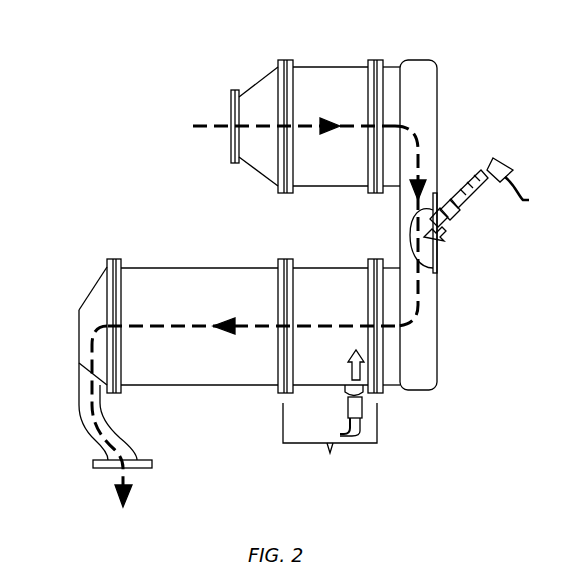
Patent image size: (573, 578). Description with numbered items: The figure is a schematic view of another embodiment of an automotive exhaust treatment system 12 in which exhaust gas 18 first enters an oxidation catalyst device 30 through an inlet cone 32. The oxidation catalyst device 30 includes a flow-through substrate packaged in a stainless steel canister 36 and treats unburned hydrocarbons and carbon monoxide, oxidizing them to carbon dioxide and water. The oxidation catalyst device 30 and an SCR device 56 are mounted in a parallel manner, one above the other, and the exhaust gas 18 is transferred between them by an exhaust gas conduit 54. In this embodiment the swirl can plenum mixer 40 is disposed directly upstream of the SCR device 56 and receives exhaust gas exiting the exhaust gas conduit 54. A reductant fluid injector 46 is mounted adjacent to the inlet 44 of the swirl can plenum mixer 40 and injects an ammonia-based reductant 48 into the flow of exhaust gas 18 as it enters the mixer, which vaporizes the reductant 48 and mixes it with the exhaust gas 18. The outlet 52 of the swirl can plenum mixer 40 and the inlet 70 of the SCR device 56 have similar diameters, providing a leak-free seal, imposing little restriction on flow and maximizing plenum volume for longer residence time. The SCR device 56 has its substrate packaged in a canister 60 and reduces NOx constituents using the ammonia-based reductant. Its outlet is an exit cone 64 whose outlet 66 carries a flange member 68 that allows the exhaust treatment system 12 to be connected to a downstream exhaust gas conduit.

The exhaust treatment system 12 is at (447, 172).
The exhaust gas 18 is at (210, 128).
The oxidation catalyst device 30 is at (322, 66).
The inlet cone 32 is at (258, 84).
The canister 36 is at (345, 78).
The swirl can plenum mixer 40 is at (330, 453).
The inlet 44 is at (383, 373).
The reductant fluid injector 46 is at (470, 200).
The reductant 48 is at (445, 233).
The outlet 52 is at (284, 260).
The exhaust gas conduit 54 is at (439, 131).
The SCR device 56 is at (170, 268).
The canister 60 is at (177, 372).
The exit cone 64 is at (97, 300).
The outlet 66 is at (103, 474).
The flange member 68 is at (97, 462).
The inlet 70 is at (287, 292).